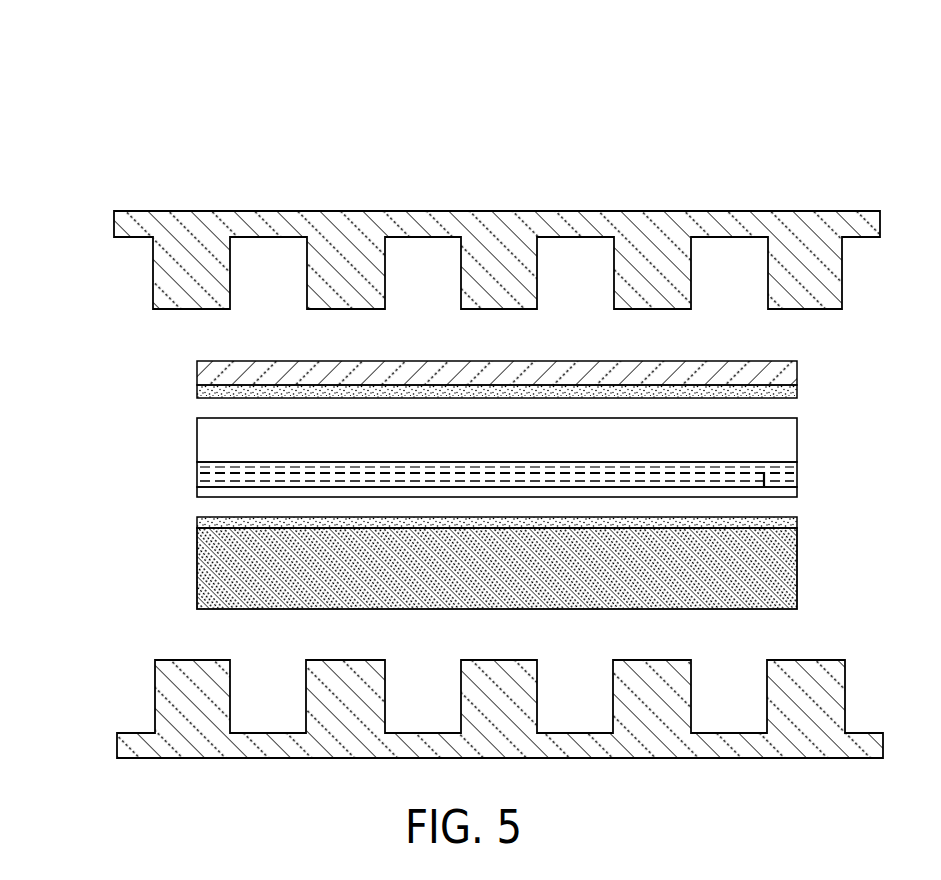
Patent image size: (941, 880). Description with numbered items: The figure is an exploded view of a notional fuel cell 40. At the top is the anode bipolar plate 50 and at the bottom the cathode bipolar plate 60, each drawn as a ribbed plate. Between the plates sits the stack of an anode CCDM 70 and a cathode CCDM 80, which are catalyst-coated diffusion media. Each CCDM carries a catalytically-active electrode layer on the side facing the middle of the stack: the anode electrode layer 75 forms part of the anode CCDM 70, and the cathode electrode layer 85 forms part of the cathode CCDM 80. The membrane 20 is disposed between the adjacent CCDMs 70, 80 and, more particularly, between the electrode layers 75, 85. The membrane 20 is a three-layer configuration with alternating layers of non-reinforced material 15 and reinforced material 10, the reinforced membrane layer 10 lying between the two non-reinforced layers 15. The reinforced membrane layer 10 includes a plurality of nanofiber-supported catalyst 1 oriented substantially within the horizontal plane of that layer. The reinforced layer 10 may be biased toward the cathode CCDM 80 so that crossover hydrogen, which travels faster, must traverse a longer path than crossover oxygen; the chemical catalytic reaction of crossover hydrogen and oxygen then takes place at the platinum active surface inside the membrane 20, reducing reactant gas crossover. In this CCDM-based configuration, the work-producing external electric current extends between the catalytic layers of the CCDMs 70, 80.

The fuel cell 40 is at (480, 397).
The anode bipolar plate 50 is at (114, 223).
The cathode bipolar plate 60 is at (117, 748).
The anode CCDM 70 is at (197, 372).
The anode electrode layer 75 is at (197, 392).
The membrane 20 is at (524, 469).
The non-reinforced layer 15 is at (197, 447).
The reinforced membrane layer 10 is at (197, 473).
The nanofiber-supported catalyst 1 is at (735, 473).
The cathode electrode layer 85 is at (197, 524).
The cathode CCDM 80 is at (197, 582).